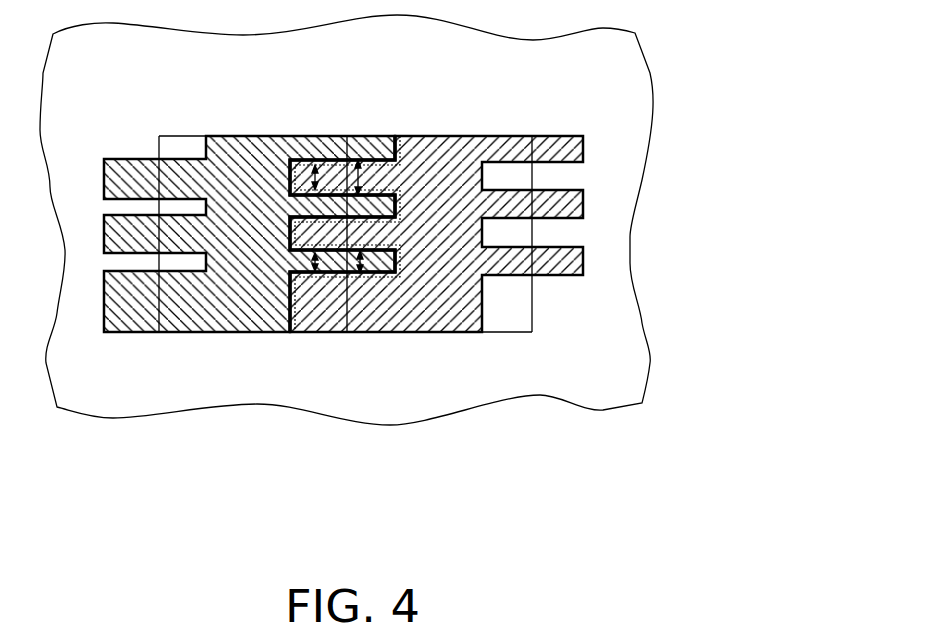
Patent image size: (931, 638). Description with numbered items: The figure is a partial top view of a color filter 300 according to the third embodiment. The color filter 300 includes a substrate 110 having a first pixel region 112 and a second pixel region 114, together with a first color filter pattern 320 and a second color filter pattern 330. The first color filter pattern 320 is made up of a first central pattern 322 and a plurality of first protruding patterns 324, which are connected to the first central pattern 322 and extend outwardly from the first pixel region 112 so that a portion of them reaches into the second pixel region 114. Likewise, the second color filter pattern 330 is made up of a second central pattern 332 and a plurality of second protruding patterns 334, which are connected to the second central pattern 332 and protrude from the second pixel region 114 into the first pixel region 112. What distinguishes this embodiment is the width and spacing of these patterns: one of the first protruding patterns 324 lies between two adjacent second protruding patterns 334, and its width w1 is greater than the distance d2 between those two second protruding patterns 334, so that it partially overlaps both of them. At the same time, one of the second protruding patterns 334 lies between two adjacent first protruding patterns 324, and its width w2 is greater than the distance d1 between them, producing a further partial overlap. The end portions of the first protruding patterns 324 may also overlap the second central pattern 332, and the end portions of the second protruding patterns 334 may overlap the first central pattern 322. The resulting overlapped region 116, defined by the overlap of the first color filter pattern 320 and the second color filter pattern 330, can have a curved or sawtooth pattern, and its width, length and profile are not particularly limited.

The color filter 300 is at (416, 272).
The substrate 110 is at (615, 353).
The first pixel region 112 is at (345, 118).
The second pixel region 114 is at (532, 118).
The overlapped region 116 is at (405, 262).
The first color filter pattern 320 is at (249, 333).
The first central pattern 322 is at (253, 230).
The first protruding patterns 324 is at (312, 256).
The second color filter pattern 330 is at (541, 234).
The second central pattern 332 is at (440, 209).
The second protruding patterns 334 is at (380, 175).
The distance between two adjacent first protruding patterns d1 is at (315, 162).
The distance between two adjacent second protruding patterns d2 is at (338, 273).
The width of each first protruding pattern w1 is at (383, 276).
The width of each second protruding pattern w2 is at (358, 158).